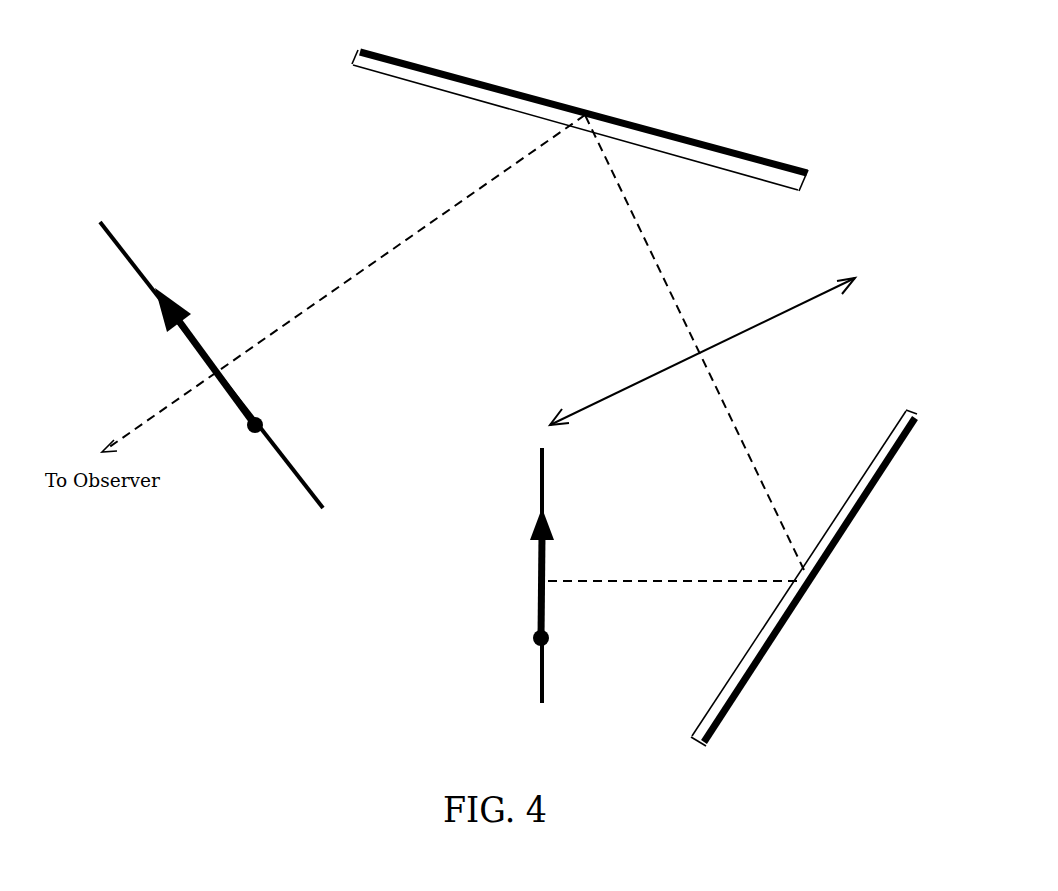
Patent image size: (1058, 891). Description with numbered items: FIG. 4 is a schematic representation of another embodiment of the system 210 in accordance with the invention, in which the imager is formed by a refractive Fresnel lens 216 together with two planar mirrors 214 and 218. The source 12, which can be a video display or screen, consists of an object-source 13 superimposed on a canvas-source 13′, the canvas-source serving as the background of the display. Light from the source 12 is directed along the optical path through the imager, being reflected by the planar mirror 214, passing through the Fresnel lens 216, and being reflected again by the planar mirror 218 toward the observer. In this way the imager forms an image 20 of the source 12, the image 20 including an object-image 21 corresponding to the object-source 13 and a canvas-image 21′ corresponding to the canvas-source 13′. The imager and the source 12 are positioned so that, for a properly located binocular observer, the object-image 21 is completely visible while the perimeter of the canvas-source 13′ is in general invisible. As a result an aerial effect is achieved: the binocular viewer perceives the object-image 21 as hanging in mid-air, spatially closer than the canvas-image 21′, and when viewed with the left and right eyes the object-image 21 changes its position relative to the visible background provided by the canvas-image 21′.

The system 210 is at (826, 105).
The planar mirror 218 is at (580, 120).
The planar mirror 214 is at (804, 578).
The refractive (Fresnel) lens 216 is at (702, 351).
The image 20 is at (215, 342).
The object-image 21 is at (200, 356).
The canvas-image 21′ is at (291, 447).
The source 12 is at (515, 480).
The object-source 13 is at (554, 573).
The canvas-source 13′ is at (558, 665).